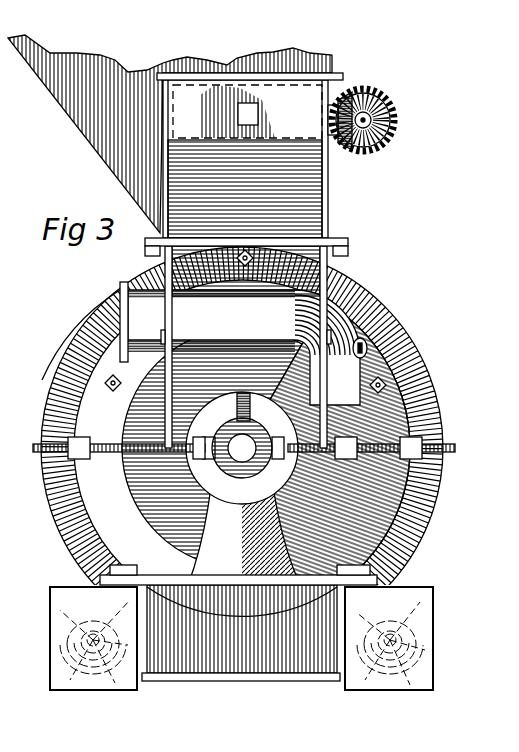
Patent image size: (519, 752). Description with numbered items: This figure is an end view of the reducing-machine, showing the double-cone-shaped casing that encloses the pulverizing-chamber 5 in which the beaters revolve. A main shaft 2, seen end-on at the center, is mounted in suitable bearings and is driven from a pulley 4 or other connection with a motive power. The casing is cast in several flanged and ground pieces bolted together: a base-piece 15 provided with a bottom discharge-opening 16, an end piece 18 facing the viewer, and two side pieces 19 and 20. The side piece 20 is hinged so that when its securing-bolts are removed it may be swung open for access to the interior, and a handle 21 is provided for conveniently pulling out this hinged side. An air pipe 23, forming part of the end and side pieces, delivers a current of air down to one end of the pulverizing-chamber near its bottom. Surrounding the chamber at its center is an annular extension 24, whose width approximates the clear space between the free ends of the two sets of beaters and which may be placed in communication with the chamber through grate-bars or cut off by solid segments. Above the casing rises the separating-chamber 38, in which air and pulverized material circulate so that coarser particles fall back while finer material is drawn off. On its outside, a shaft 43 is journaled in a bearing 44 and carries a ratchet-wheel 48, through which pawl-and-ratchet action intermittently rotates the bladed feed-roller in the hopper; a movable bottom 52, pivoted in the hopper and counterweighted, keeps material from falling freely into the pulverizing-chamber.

The main shaft 2 is at (242, 448).
The pulley 4 is at (206, 412).
The pulverizing-chamber 5 is at (229, 448).
The base-piece 15 is at (188, 628).
The bottom discharge-opening 16 is at (205, 674).
The end piece 18 is at (236, 392).
The side piece 19 is at (72, 352).
The hinged side piece 20 is at (383, 322).
The handle 21 is at (367, 347).
The air pipe 23 is at (240, 343).
The annular extension 24 is at (438, 390).
The separating-chamber 38 is at (278, 62).
The shaft 43 is at (388, 120).
The bearing 44 is at (340, 100).
The ratchet-wheel 48 is at (386, 104).
The movable bottom 52 is at (248, 114).